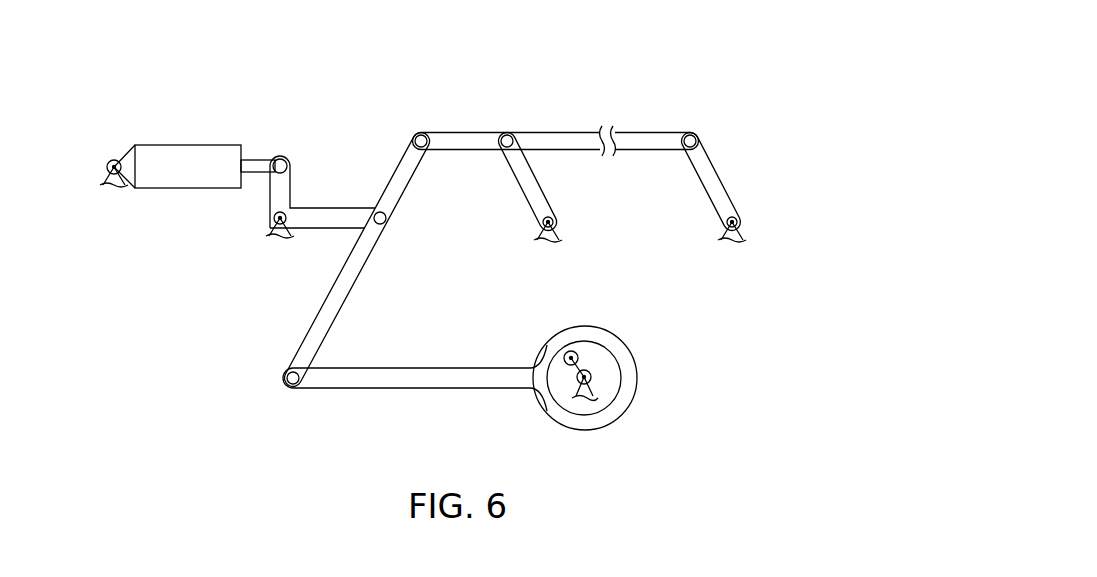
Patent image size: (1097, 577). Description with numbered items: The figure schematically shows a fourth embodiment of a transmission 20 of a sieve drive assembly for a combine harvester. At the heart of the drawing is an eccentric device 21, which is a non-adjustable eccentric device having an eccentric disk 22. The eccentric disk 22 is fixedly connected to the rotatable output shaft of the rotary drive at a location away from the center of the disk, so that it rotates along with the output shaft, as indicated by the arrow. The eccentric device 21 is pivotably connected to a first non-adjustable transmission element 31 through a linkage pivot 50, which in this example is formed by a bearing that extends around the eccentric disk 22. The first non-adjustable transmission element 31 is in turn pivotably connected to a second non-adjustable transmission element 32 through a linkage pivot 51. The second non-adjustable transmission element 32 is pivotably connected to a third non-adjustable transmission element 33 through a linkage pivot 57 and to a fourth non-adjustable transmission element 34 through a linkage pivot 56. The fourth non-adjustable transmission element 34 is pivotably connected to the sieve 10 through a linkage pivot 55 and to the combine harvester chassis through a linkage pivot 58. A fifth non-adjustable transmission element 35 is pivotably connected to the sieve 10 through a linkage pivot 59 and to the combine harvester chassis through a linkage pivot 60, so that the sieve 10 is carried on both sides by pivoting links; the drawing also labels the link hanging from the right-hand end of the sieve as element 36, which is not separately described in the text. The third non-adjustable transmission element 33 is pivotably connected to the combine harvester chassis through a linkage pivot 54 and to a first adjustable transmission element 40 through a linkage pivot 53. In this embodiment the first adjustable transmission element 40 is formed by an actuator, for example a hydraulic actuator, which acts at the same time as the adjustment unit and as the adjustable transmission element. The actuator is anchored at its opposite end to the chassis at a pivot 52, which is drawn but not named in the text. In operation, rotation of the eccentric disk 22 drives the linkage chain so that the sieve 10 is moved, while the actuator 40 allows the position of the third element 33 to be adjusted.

The transmission 20 is at (385, 85).
The sieve 10 is at (660, 133).
The eccentric device 21 is at (600, 362).
The eccentric disk 22 is at (595, 390).
The first non-adjustable transmission element 31 is at (404, 390).
The second non-adjustable transmission element 32 is at (318, 312).
The third non-adjustable transmission element 33 is at (328, 209).
The fourth non-adjustable transmission element 34 is at (472, 133).
The fifth non-adjustable transmission element 35 is at (518, 177).
The sixth link 36 is at (710, 190).
The first adjustable transmission element 40 is at (213, 145).
The linkage pivot 50 is at (563, 352).
The linkage pivot 51 is at (283, 383).
The cylinder pivot 52 is at (112, 160).
The linkage pivot 53 is at (282, 158).
The linkage pivot 54 is at (270, 220).
The linkage pivot 55 is at (507, 135).
The linkage pivot 56 is at (422, 135).
The linkage pivot 57 is at (393, 220).
The linkage pivot 58 is at (553, 222).
The linkage pivot 59 is at (697, 140).
The linkage pivot 60 is at (742, 222).